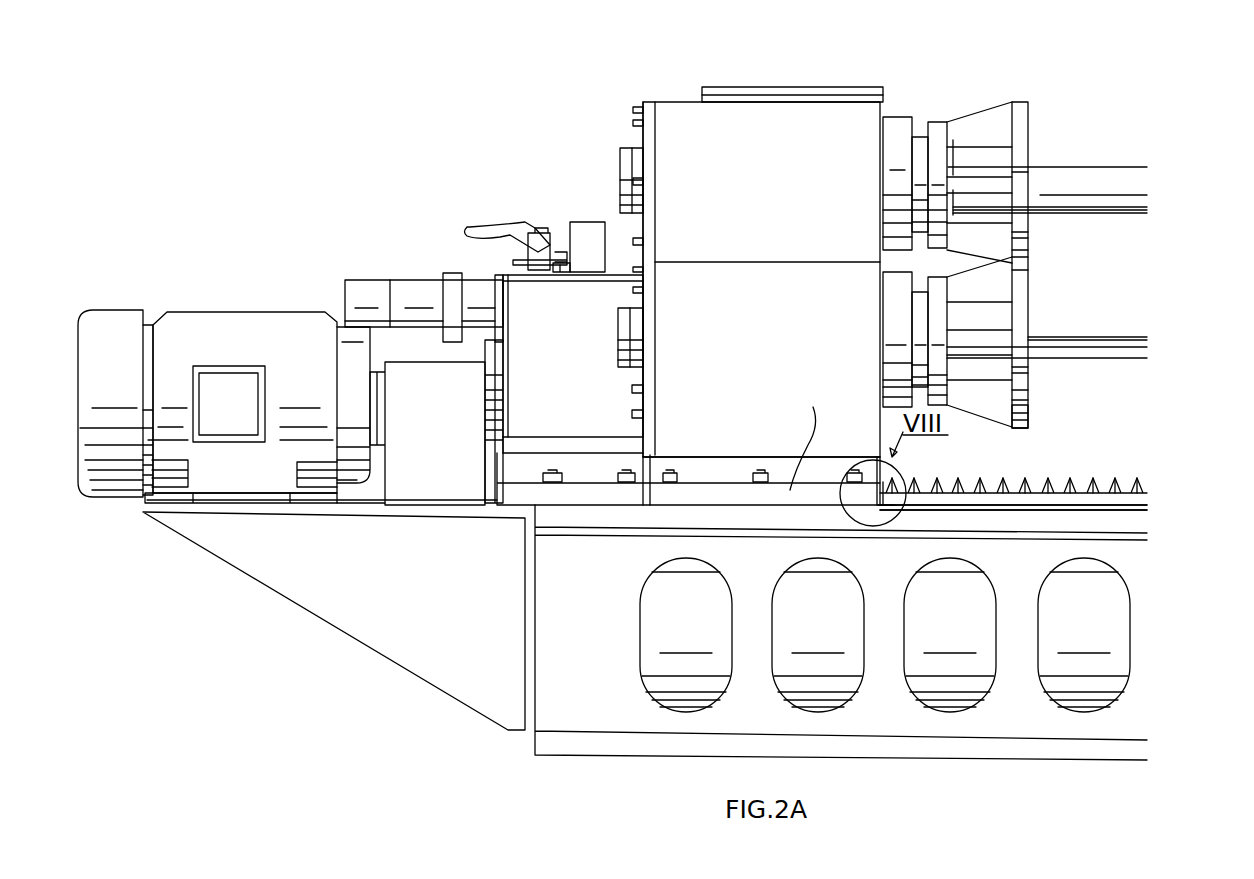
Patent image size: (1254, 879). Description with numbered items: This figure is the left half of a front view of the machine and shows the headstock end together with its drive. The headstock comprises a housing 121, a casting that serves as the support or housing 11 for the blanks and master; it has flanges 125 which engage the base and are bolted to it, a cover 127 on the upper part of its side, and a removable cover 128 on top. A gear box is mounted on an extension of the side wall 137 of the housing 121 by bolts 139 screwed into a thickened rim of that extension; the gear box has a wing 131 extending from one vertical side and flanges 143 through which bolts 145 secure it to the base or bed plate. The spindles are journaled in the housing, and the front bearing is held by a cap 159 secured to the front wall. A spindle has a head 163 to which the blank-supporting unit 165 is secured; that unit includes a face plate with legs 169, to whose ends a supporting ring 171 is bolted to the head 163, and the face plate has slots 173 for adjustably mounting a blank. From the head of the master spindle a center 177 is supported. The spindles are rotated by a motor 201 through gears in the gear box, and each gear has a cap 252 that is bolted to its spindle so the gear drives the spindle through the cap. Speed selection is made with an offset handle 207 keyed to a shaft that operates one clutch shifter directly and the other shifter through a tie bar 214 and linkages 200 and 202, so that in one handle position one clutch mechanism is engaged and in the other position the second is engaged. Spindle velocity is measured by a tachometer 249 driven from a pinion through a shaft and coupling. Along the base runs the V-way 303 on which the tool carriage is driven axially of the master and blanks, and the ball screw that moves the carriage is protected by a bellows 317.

The support or housing 11 is at (768, 372).
The housing 121 is at (707, 432).
The flanges 125 is at (853, 505).
The cover 127 is at (652, 102).
The removable cover 128 is at (740, 87).
The wing 131 is at (645, 400).
The side wall 137 is at (790, 490).
The bolts 139 is at (632, 388).
The flanges 143 is at (597, 512).
The bolts 145 is at (762, 473).
The cap 159 is at (900, 117).
The head 163 is at (918, 137).
The blank-supporting unit 165 is at (1033, 292).
The legs 169 is at (987, 407).
The supporting ring 171 is at (945, 122).
The slots 173 is at (1030, 408).
The center 177 is at (970, 167).
The linkage 200 is at (543, 262).
The motor 201 is at (220, 312).
The linkage 202 is at (560, 262).
The offset handle 207 is at (475, 228).
The tie bar 214 is at (556, 258).
The tachometer 249 is at (368, 280).
The cap 252 is at (622, 160).
The V-way 303 is at (1045, 495).
The bellows 317 is at (1097, 480).